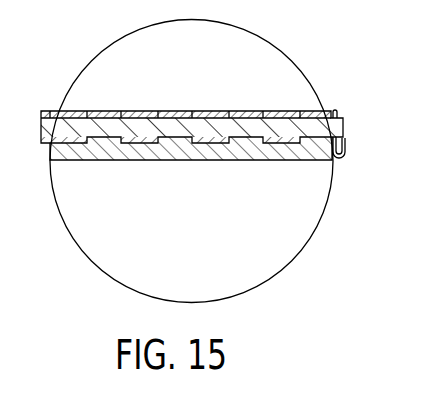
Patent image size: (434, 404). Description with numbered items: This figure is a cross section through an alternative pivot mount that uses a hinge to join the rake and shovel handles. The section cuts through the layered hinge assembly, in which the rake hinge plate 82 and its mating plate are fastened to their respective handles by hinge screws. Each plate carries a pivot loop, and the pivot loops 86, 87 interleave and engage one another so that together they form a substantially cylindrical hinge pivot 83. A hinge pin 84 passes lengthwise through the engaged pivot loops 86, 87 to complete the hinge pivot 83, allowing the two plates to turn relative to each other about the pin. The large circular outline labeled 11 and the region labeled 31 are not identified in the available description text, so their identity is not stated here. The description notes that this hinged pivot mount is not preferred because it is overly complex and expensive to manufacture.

The substrate 11 is at (197, 234).
The upper region 31 is at (202, 83).
The rake hinge plate 82 is at (331, 156).
The hinge pivot 83 is at (333, 97).
The hinge pin 84 is at (343, 122).
The pivot loop 86 is at (283, 111).
The pivot loop 87 is at (320, 111).